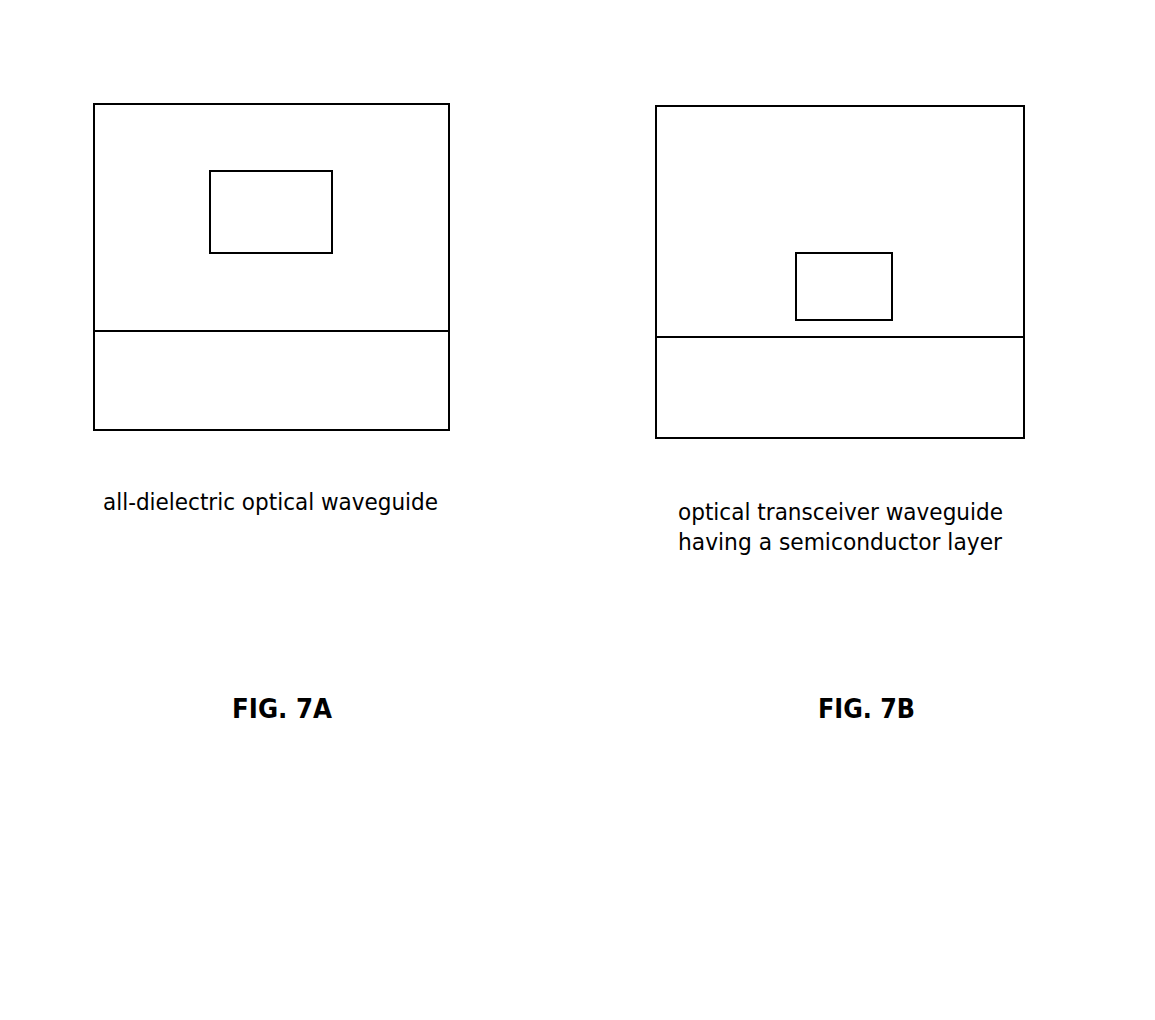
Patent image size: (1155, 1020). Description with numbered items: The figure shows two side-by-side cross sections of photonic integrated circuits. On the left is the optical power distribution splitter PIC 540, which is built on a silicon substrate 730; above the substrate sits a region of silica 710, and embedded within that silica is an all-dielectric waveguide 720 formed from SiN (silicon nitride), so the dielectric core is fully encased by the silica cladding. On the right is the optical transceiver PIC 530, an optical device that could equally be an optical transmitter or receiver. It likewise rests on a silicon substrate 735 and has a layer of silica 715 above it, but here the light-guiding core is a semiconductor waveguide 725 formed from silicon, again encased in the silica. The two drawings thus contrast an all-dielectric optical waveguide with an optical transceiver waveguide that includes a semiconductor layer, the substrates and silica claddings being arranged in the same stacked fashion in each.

In FIG. 7A, the optical power distribution splitter PIC 540 is at (274, 224).
In FIG. 7A, the silica 710 is at (271, 217).
In FIG. 7A, the all-dielectric waveguide 720 is at (271, 212).
In FIG. 7A, the silicon substrate 730 is at (271, 380).
In FIG. 7B, the optical transceiver PIC 530 is at (840, 228).
In FIG. 7B, the silica 715 is at (840, 221).
In FIG. 7B, the semiconductor waveguide 725 is at (844, 286).
In FIG. 7B, the silicon substrate 735 is at (840, 387).